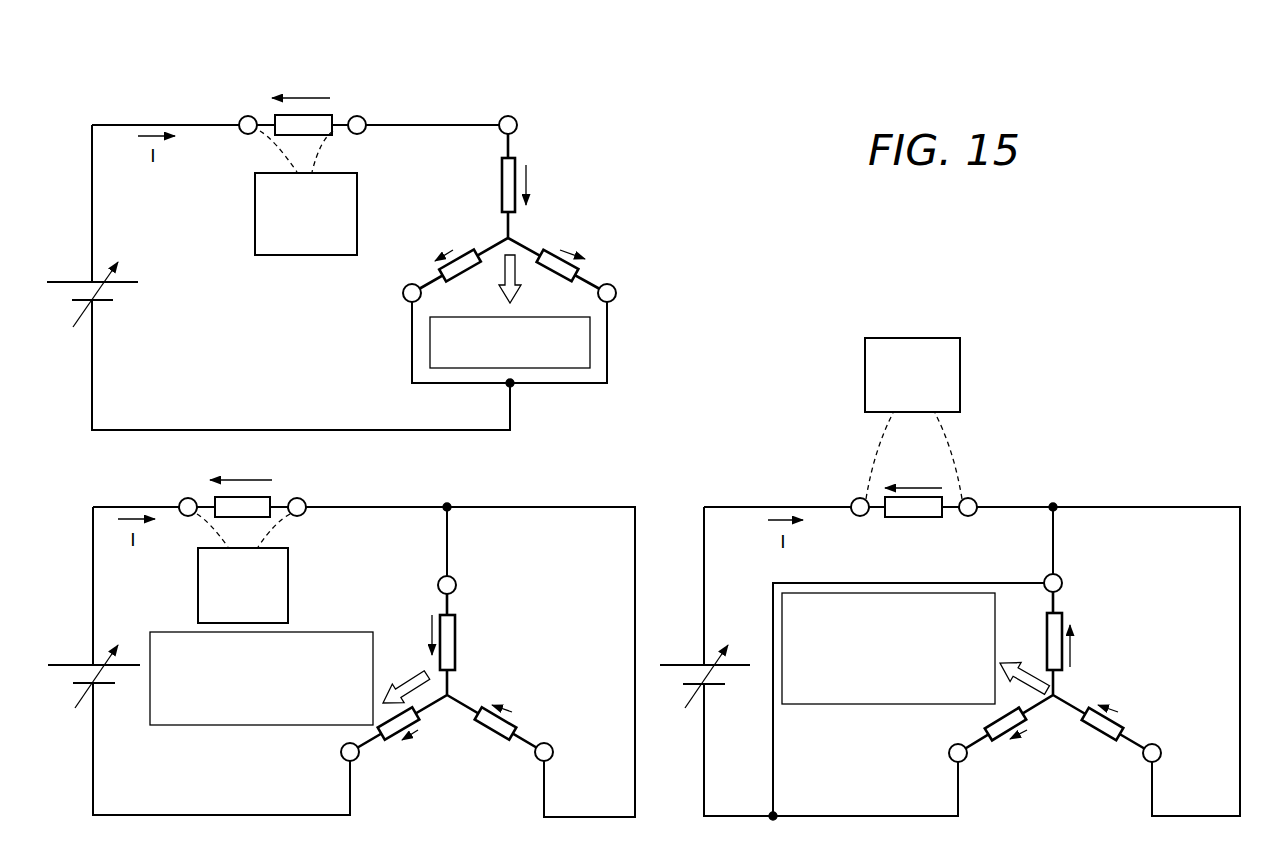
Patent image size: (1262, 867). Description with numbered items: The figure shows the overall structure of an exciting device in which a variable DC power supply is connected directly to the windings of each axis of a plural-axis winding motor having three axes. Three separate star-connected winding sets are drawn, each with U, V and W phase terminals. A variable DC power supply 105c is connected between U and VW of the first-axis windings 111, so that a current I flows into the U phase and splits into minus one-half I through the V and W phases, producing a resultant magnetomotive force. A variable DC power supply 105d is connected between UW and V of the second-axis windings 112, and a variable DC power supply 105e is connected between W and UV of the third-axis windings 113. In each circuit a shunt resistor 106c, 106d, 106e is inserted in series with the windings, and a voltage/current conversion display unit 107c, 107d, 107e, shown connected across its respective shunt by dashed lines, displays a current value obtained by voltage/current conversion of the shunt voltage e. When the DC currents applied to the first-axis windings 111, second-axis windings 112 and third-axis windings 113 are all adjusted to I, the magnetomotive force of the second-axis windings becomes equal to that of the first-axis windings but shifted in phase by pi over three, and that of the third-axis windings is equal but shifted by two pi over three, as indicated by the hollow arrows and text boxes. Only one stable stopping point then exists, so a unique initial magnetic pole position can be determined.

The variable DC power supply 105c is at (102, 302).
The shunt resistor 106c is at (338, 113).
The voltage/current conversion display unit 107c is at (357, 197).
The first-axis windings 111 is at (558, 185).
The variable DC power supply 105d is at (102, 687).
The shunt resistor 106d is at (278, 495).
The voltage/current conversion display unit 107d is at (288, 577).
The second-axis windings 112 is at (480, 645).
The variable DC power supply 105e is at (720, 687).
The shunt resistor 106e is at (920, 523).
The voltage/current conversion display unit 107e is at (960, 363).
The third-axis windings 113 is at (1108, 628).